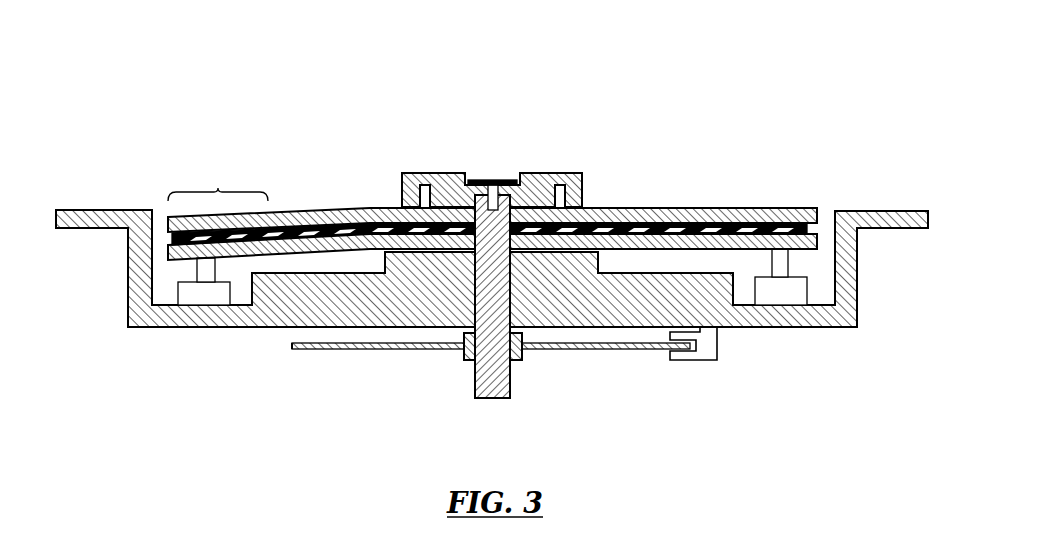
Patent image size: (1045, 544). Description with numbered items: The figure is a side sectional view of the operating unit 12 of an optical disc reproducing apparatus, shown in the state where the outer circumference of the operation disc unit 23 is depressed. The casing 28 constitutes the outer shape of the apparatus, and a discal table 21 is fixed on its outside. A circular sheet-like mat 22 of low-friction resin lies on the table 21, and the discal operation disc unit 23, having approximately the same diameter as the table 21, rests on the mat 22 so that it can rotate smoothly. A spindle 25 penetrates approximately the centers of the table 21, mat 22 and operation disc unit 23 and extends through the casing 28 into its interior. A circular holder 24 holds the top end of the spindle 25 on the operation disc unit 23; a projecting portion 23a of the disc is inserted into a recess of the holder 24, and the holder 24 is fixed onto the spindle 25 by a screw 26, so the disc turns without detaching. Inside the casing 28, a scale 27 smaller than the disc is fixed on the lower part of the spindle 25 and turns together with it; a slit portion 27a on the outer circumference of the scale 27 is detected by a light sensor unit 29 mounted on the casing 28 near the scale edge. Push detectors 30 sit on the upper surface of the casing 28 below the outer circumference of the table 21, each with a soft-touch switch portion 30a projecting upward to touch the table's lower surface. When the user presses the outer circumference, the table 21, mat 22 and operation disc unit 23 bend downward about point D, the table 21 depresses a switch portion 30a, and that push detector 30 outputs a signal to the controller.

The operating unit 12 is at (786, 110).
The table 21 is at (168, 247).
The mat 22 is at (814, 228).
The operation disc unit 23 is at (700, 208).
The projecting portion 23a is at (578, 196).
The holder 24 is at (425, 174).
The spindle 25 is at (512, 385).
The screw 26 is at (500, 180).
The scale 27 is at (422, 350).
The slit portion 27a is at (323, 350).
The casing 28 is at (813, 327).
The light sensor unit 29 is at (717, 350).
The push detector 30 is at (200, 305).
The switch portion 30a is at (196, 264).
The point D is at (385, 258).